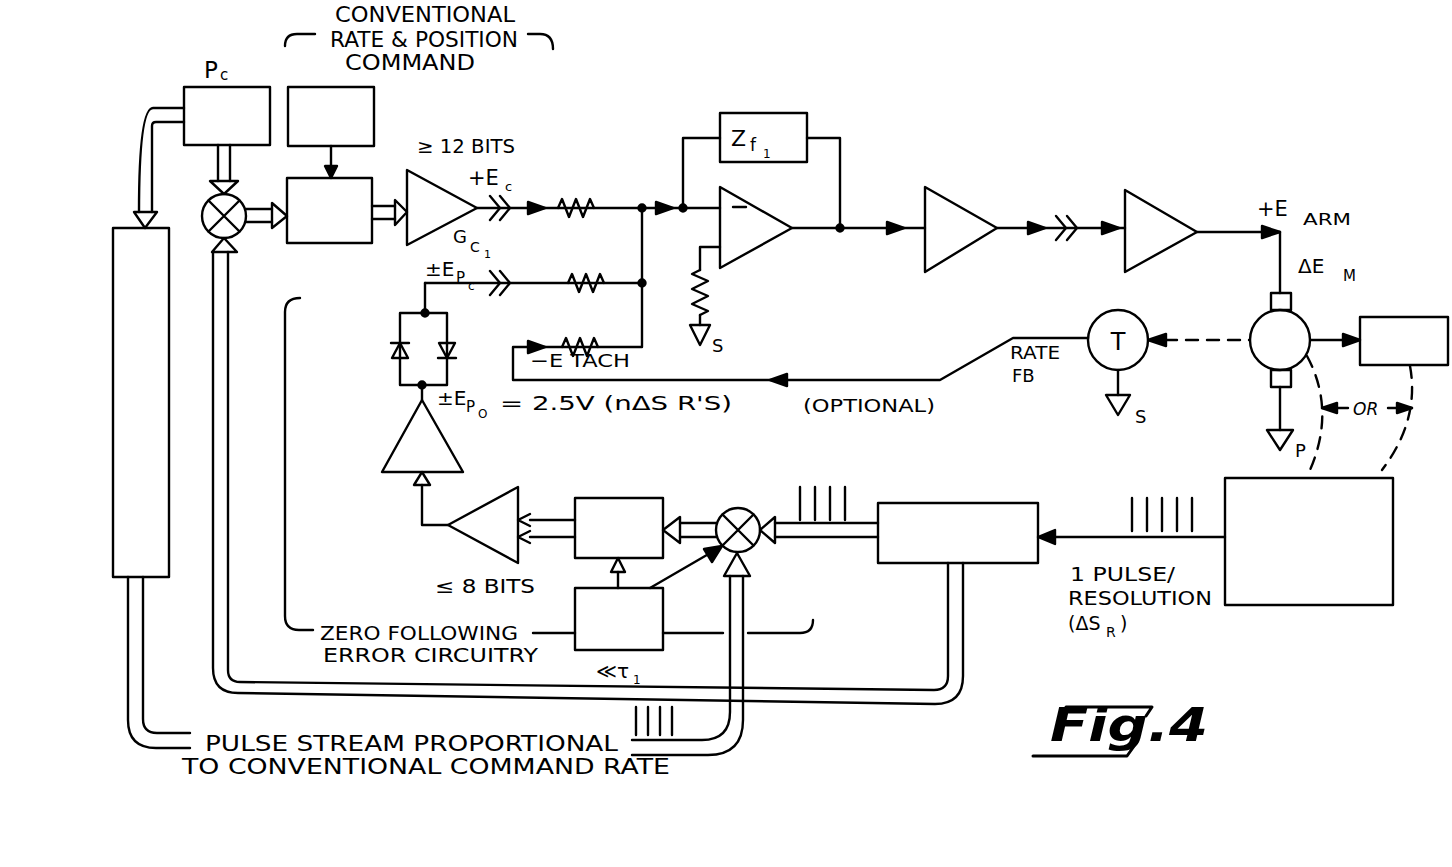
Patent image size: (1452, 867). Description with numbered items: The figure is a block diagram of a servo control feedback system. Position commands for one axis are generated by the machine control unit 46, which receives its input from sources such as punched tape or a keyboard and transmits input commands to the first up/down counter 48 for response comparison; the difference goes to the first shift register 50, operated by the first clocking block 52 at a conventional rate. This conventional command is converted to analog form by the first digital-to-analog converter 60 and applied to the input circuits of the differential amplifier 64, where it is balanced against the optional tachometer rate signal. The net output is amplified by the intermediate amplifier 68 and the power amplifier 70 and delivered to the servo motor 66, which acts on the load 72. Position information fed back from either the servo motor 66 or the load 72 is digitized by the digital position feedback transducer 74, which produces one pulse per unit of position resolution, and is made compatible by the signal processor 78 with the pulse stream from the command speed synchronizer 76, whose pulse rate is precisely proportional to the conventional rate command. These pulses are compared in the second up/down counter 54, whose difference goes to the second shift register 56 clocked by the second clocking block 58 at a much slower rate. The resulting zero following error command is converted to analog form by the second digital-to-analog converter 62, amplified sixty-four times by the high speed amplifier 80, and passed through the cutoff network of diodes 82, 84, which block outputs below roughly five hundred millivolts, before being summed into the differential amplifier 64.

The machine control unit 46 is at (190, 92).
The first up/down counter 48 is at (212, 205).
The first shift register 50 is at (364, 182).
The first clocking block 52 is at (374, 96).
The second up/down counter 54 is at (757, 546).
The second shift register 56 is at (604, 500).
The second clocking block 58 is at (577, 651).
The first digital-to-analog converter 60 is at (409, 241).
The second digital-to-analog converter 62 is at (508, 493).
The differential amplifier 64 is at (752, 250).
The servo motor 66 is at (1301, 324).
The intermediate amplifier 68 is at (955, 206).
The power amplifier 70 is at (1170, 216).
The load 72 is at (1395, 318).
The digital position feedback transducer 74 is at (1395, 542).
The command speed synchronizer 76 is at (121, 230).
The signal processor 78 is at (1002, 505).
The high speed amplifier 80 is at (398, 476).
The diode 82 is at (393, 351).
The diode 84 is at (450, 348).